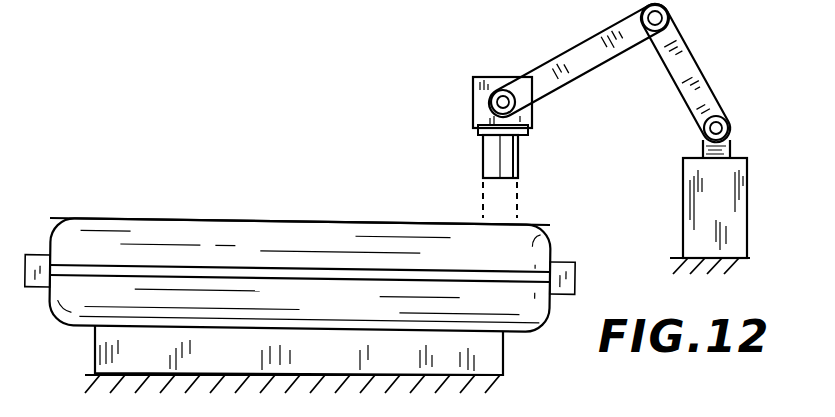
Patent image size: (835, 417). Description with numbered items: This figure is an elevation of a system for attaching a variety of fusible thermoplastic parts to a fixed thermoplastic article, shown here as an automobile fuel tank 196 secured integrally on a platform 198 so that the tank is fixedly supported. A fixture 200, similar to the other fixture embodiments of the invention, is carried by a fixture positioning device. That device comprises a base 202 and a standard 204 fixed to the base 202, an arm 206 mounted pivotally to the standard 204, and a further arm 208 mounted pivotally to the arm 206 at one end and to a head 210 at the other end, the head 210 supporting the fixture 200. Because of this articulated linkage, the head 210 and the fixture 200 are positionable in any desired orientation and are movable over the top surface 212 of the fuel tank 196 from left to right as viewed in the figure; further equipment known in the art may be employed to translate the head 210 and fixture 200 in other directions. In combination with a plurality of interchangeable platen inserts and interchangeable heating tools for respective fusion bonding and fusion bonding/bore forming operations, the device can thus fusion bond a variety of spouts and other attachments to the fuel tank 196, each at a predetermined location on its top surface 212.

The automobile fuel tank 196 is at (160, 234).
The top surface 212 is at (313, 220).
The platform 198 is at (480, 356).
The fixture 200 is at (497, 162).
The head 210 is at (480, 105).
The arm 208 is at (547, 82).
The arm 206 is at (677, 51).
The standard 204 is at (725, 147).
The base 202 is at (732, 216).